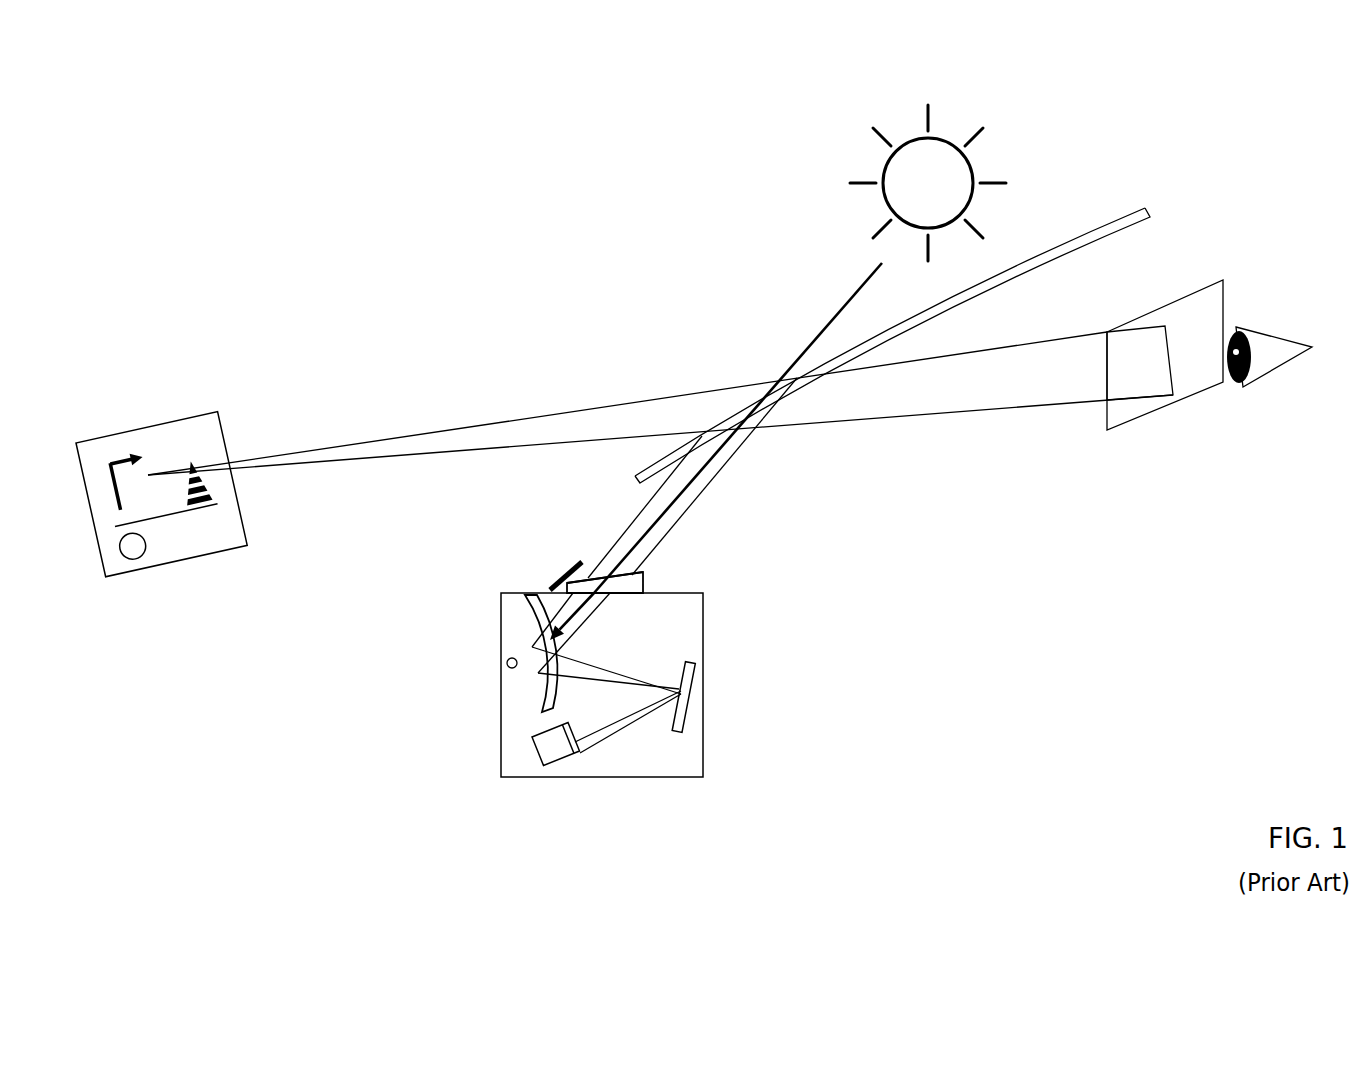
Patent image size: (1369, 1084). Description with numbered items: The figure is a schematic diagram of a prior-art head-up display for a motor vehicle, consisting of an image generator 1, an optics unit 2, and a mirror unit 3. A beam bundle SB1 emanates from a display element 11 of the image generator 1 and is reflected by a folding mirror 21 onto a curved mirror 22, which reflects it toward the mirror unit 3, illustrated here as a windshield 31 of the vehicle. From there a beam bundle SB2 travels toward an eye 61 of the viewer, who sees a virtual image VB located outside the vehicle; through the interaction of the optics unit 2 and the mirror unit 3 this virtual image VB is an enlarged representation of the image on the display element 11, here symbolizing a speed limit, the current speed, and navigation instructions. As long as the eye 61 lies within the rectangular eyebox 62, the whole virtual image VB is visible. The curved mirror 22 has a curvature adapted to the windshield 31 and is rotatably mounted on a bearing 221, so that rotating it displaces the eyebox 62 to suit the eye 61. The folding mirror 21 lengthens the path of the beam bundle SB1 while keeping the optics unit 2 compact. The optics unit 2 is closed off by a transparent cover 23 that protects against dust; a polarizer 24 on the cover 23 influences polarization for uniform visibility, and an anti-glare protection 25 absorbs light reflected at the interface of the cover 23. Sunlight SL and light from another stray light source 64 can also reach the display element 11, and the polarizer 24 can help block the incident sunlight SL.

The image generator 1 is at (535, 750).
The display element 11 is at (580, 753).
The optics unit 2 is at (703, 623).
The folding mirror 21 is at (697, 692).
The curved mirror 22 is at (523, 617).
The bearing 221 is at (507, 663).
The transparent cover 23 is at (643, 577).
The polarizer 24 is at (632, 575).
The anti-glare protection 25 is at (565, 573).
The mirror unit 3 is at (892, 345).
The windshield 31 is at (877, 340).
The eye 61 is at (1273, 335).
The eyebox 62 is at (1122, 425).
The stray light source 64 is at (883, 167).
The sunlight SL is at (790, 363).
The beam bundle SB1 is at (628, 720).
The beam bundle SB2 is at (962, 393).
The virtual image VB is at (93, 527).